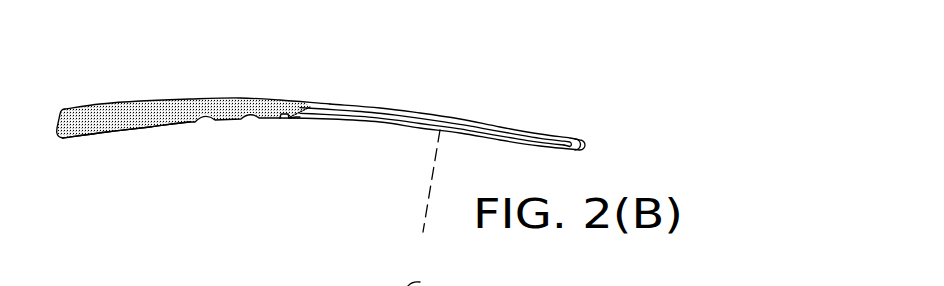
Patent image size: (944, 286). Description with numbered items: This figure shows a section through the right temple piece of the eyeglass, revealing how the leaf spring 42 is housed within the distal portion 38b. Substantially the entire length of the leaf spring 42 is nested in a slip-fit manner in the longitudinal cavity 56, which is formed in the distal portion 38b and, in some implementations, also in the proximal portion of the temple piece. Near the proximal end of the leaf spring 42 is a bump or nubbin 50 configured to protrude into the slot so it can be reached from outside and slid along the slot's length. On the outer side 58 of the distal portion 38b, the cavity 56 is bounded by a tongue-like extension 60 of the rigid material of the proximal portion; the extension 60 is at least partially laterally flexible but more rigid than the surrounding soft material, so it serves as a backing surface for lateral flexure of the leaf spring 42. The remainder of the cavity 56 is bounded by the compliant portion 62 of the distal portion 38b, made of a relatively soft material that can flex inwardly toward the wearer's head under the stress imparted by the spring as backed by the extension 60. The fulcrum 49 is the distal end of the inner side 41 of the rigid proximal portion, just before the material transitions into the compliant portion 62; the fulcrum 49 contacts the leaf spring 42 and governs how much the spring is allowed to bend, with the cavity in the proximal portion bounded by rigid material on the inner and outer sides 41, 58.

The outer side 58 is at (172, 100).
The inner side 41 is at (158, 125).
The bump or nubbin 50 is at (282, 120).
The fulcrum 49 is at (297, 117).
The distal portion 38b is at (482, 128).
The tongue-like extension 60 is at (404, 114).
The leaf spring 42 is at (372, 113).
The longitudinal cavity 56 is at (572, 138).
The compliant portion 62 is at (427, 198).